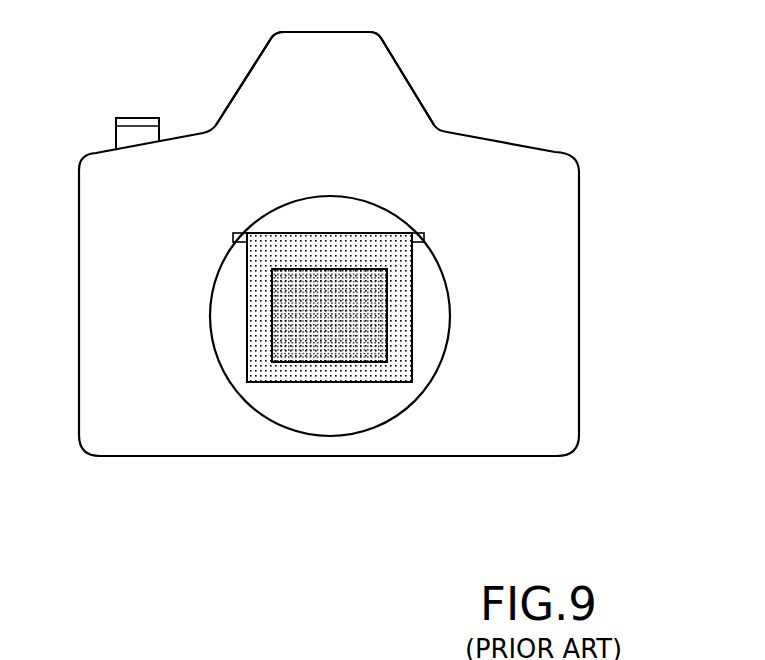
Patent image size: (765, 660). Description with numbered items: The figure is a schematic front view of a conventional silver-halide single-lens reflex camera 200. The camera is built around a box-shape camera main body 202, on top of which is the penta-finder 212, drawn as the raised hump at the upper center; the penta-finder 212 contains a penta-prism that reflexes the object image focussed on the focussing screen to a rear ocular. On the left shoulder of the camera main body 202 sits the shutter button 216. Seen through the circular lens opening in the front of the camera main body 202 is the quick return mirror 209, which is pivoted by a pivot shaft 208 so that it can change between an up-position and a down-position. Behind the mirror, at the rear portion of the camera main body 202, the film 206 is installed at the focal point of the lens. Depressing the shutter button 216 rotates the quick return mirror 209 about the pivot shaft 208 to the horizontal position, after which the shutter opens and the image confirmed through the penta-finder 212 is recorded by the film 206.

The camera 200 is at (198, 123).
The camera main body 202 is at (582, 274).
The film 206 is at (367, 362).
The pivot shaft 208 is at (424, 236).
The quick return mirror 209 is at (412, 340).
The penta-finder 212 is at (398, 63).
The shutter button 216 is at (127, 137).